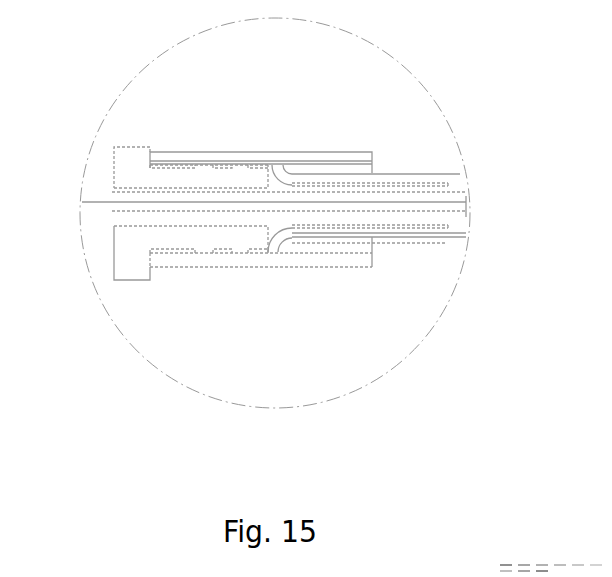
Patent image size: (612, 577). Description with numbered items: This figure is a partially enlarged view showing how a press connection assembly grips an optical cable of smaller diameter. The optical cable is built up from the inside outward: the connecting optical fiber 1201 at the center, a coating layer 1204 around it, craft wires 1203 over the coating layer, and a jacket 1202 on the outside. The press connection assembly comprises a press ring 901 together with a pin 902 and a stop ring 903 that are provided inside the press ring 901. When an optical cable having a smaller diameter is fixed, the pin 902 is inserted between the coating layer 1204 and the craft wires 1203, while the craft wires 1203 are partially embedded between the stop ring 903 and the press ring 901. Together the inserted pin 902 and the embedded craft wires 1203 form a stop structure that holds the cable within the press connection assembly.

The stop ring 903 is at (134, 150).
The pin 902 is at (412, 190).
The press ring 901 is at (241, 160).
The craft wires 1203 is at (187, 163).
The coating layer 1204 is at (307, 200).
The connecting optical fiber 1201 is at (262, 208).
The jacket 1202 is at (352, 242).